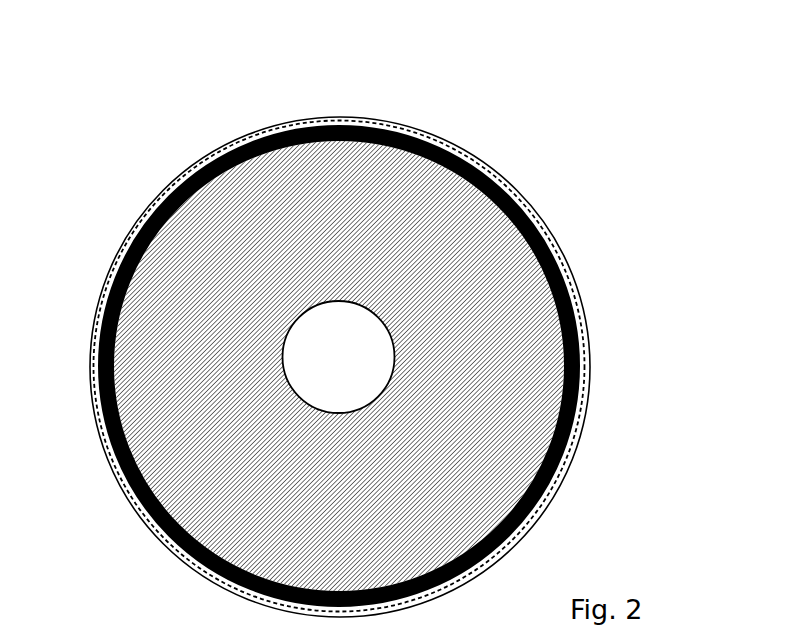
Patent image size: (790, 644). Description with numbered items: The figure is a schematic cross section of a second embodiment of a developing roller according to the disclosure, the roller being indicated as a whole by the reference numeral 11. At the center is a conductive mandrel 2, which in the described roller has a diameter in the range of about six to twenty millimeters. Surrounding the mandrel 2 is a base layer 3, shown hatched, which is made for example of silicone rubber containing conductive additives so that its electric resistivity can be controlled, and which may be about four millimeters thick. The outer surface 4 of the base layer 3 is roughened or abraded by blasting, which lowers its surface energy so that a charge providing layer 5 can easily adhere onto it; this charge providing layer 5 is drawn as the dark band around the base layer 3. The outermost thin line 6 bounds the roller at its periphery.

The electrical cable 11 is at (385, 321).
The conductive mandrel 2 is at (352, 379).
The base layer 3 is at (427, 358).
The outer surface of the base layer 4 is at (540, 230).
The charge providing layer 5 is at (465, 156).
The outer sheath 6 is at (332, 117).